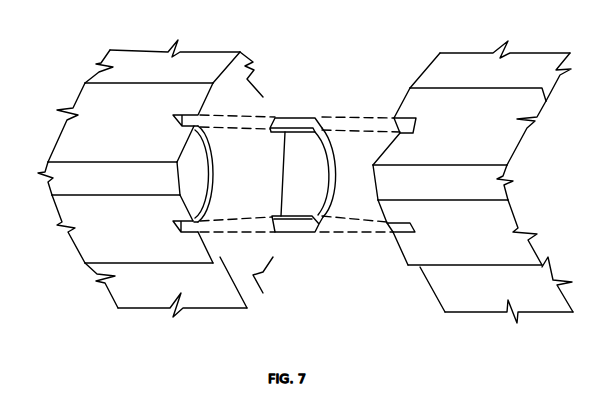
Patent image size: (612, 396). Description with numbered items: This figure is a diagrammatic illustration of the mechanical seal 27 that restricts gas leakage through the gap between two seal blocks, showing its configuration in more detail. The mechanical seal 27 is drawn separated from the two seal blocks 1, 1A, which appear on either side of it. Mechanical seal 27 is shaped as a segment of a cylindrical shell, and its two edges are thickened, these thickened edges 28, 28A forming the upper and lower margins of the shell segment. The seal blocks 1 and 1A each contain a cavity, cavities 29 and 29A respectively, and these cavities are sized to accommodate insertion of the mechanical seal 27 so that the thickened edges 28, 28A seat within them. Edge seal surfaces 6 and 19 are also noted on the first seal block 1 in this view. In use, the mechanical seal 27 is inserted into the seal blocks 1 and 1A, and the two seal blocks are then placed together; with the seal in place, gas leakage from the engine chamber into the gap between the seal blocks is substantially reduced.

The seal block 1 is at (149, 171).
The seal block 1A is at (473, 176).
The edge seal surface 6 is at (70, 147).
The edge seal surface 19 is at (95, 242).
The mechanical seal 27 is at (300, 175).
The thickened edge 28 is at (270, 131).
The thickened edge 28A is at (273, 218).
The cavity 29 is at (173, 222).
The cavity 29A is at (413, 228).